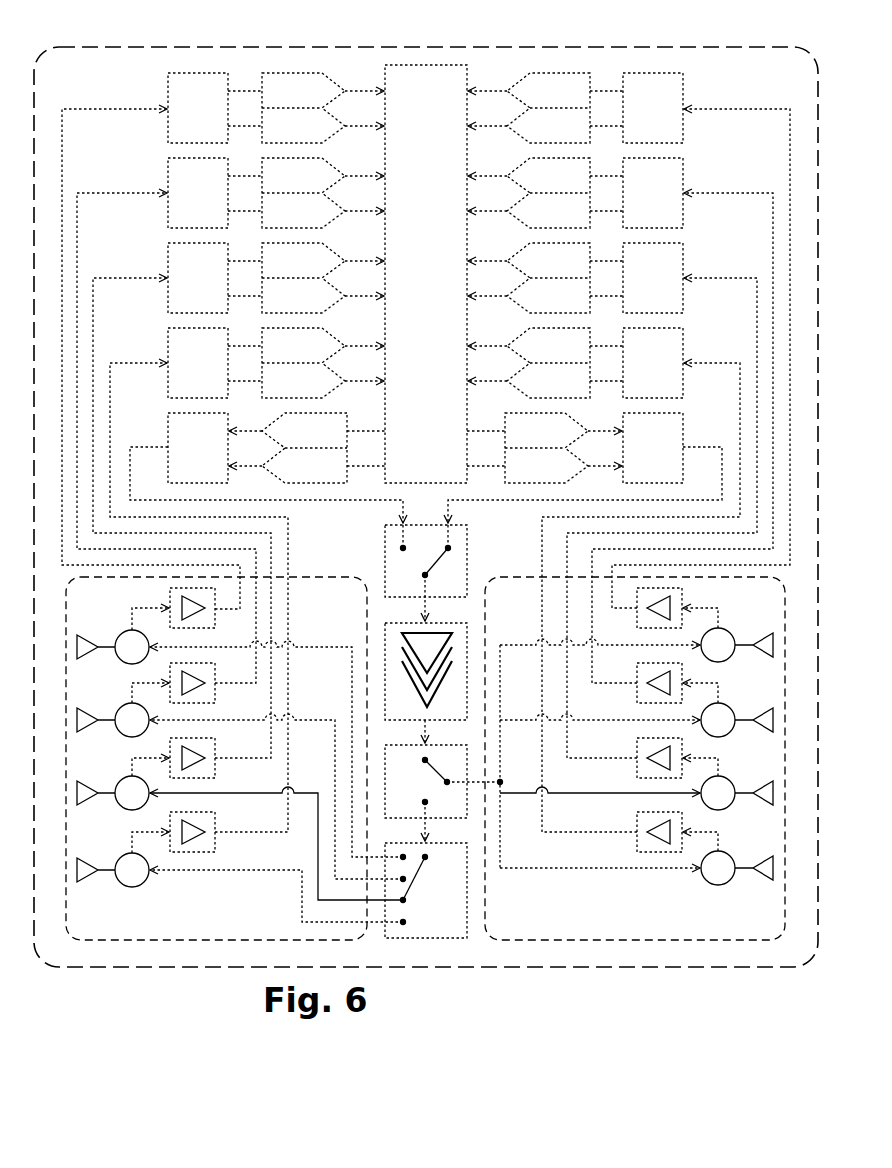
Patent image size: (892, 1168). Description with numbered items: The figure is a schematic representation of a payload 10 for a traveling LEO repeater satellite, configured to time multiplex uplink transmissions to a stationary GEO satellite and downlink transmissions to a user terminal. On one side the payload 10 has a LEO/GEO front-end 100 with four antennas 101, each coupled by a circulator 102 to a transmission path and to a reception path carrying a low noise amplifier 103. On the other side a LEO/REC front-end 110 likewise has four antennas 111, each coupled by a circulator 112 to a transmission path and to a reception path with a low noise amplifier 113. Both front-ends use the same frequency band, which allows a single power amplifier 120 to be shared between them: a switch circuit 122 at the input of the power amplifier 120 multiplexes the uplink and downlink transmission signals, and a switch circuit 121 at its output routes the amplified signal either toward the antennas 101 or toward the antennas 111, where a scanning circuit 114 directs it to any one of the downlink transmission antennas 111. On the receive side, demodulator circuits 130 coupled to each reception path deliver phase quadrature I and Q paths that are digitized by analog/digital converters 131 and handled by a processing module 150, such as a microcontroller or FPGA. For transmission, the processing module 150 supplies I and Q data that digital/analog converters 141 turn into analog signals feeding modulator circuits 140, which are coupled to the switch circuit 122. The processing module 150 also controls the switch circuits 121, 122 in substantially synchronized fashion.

The payload 10 is at (705, 36).
The LEO/GEO front-end 100 is at (618, 941).
The antenna 101 is at (757, 658).
The circulator 102 is at (732, 640).
The low noise amplifier 103 is at (675, 597).
The LEO/REC front-end 110 is at (205, 942).
The antenna 111 is at (97, 672).
The circulator 112 is at (128, 630).
The low noise amplifier 113 is at (167, 593).
The scanning circuit 114 is at (438, 919).
The power amplifier 120 is at (463, 632).
The switch circuit 121 is at (463, 804).
The switch circuit 122 is at (388, 562).
The demodulator circuit 130 is at (180, 119).
The analog/digital converter 131 is at (273, 102).
The modulator circuit 140 is at (180, 459).
The digital/analog converter 141 is at (298, 442).
The processing module 150 is at (408, 274).